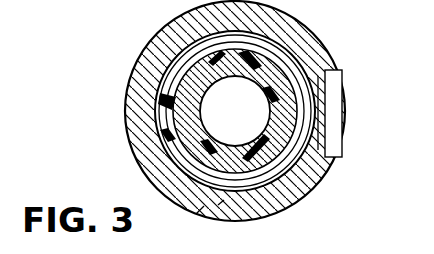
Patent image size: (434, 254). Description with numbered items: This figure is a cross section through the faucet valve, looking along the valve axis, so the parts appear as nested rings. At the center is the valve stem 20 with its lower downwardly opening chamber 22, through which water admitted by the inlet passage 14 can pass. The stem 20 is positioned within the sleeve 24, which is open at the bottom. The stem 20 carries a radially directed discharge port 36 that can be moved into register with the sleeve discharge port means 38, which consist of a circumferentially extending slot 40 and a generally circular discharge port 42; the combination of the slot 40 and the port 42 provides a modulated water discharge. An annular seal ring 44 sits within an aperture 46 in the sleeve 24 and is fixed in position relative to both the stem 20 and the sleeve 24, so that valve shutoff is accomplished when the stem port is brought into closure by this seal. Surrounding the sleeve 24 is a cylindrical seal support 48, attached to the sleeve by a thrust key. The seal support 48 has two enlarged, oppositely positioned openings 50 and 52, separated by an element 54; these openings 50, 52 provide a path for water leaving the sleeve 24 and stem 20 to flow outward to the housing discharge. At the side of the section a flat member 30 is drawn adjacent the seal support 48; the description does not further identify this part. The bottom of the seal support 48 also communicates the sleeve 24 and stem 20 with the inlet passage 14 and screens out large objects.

The inlet passage 14 is at (235, 110).
The valve stem 20 is at (190, 13).
The chamber 22 is at (235, 111).
The sleeve 24 is at (196, 214).
The flat mounting block 30 is at (338, 122).
The discharge port 36 is at (168, 130).
The sleeve discharge port means 38 is at (257, 164).
The slot 40 is at (218, 205).
The discharge port 42 is at (298, 150).
The seal ring 44 is at (178, 70).
The aperture 46 is at (168, 102).
The seal support 48 is at (167, 149).
The opening 50 is at (273, 50).
The opening 52 is at (284, 167).
The element 54 is at (312, 108).